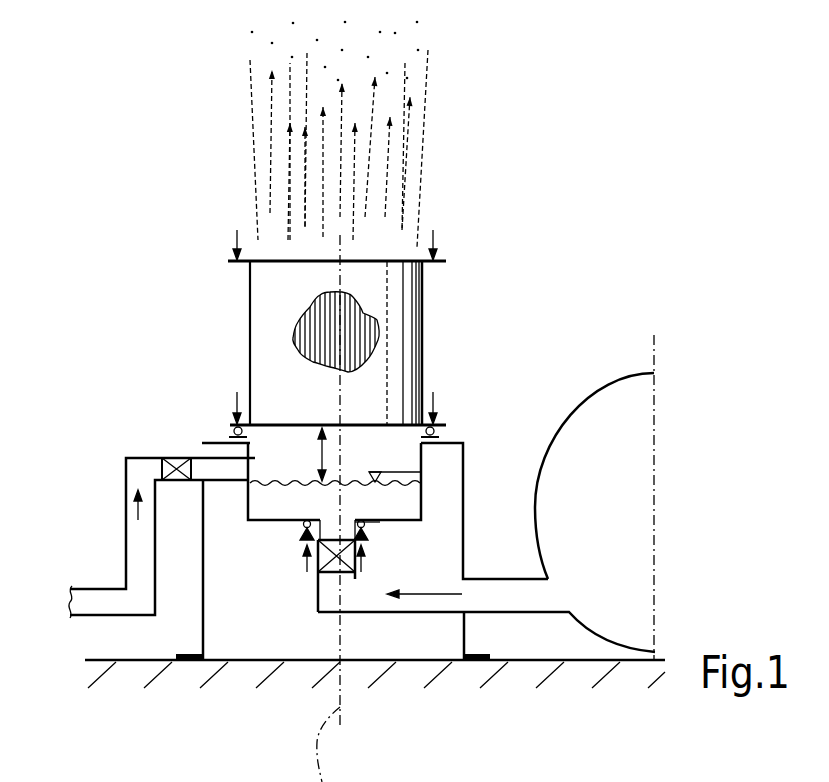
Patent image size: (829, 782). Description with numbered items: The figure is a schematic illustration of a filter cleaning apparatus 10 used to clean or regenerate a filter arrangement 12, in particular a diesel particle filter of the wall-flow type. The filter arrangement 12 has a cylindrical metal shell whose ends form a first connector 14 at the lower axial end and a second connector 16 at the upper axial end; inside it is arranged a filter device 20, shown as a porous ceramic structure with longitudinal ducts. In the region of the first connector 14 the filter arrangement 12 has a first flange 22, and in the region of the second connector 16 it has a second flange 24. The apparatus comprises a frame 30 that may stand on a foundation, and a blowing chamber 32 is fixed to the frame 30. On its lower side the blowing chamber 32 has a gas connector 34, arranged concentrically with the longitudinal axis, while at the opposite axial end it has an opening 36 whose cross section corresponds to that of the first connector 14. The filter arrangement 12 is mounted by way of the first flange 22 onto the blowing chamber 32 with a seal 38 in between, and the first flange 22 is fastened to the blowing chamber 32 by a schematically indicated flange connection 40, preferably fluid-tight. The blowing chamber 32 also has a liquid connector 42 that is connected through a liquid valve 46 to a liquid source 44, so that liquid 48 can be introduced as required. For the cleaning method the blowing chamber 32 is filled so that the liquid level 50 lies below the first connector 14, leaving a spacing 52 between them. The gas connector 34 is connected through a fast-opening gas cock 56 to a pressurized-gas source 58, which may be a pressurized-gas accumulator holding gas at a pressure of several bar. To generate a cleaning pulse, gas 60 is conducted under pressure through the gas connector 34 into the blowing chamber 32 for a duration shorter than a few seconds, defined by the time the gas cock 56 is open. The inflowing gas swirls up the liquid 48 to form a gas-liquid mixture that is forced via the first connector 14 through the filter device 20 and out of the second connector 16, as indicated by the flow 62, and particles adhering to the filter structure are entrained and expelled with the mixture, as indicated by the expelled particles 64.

The filter cleaning apparatus 10 is at (603, 267).
The filter arrangement 12 is at (250, 310).
The first connector 14 is at (275, 433).
The second connector 16 is at (285, 258).
The filter device 20 is at (352, 340).
The first flange 22 is at (424, 420).
The second flange 24 is at (440, 263).
The frame 30 is at (463, 561).
The blowing chamber 32 is at (421, 507).
The gas connector 34 is at (336, 540).
The opening 36 is at (365, 420).
The seal 38 is at (437, 430).
The flange connection 40 is at (237, 398).
The liquid connector 42 is at (250, 478).
The liquid source 44 is at (85, 600).
The liquid valve 46 is at (175, 458).
The liquid 48 is at (350, 497).
The liquid level 50 is at (428, 470).
The spacing 52 is at (336, 445).
The fast-opening gas cock 56 is at (340, 556).
The pressurized-gas source 58 is at (607, 527).
The gas 60 is at (427, 594).
The gas-liquid mixture flow 62 is at (383, 160).
The expelled gas-liquid mixture with entrained particles 64 is at (393, 33).